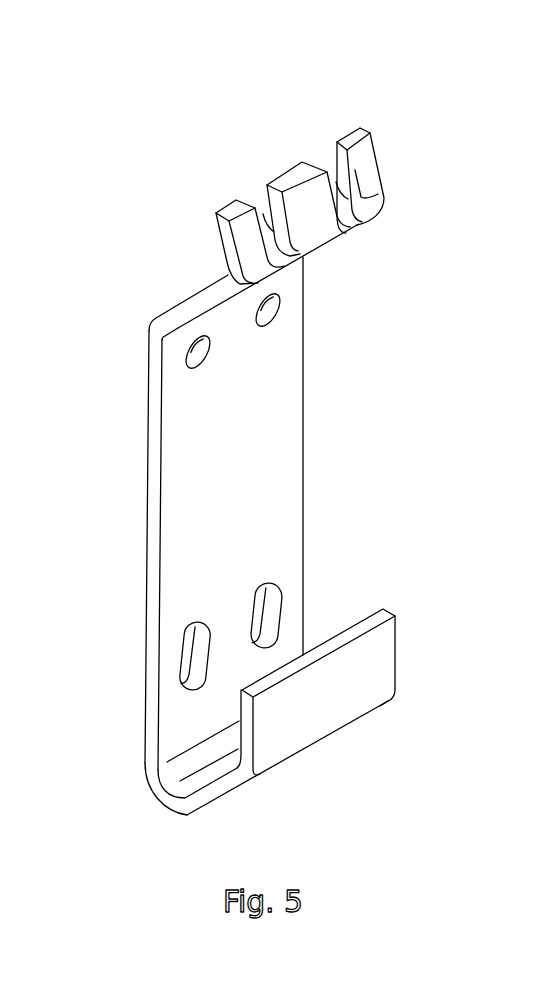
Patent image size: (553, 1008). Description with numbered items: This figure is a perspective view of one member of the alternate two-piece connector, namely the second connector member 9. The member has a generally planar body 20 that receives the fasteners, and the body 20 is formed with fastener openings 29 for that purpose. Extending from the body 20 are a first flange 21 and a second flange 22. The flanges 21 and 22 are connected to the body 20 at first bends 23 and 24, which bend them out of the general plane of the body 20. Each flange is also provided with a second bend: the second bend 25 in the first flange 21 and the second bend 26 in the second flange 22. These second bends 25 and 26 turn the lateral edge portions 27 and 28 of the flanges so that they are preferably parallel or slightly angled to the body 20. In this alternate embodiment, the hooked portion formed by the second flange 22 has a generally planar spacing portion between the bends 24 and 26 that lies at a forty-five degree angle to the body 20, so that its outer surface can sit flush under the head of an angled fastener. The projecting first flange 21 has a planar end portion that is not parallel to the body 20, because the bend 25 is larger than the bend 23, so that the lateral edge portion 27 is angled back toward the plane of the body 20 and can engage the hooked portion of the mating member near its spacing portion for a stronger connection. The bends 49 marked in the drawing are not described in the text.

The second connector member 9 is at (274, 452).
The body 20 is at (303, 522).
The first flange 21 is at (373, 150).
The second flange 22 is at (222, 800).
The first bend 23 is at (155, 318).
The first bend 24 is at (167, 808).
The second bend 25 is at (303, 281).
The second bend 26 is at (260, 781).
The lateral edge portion 27 is at (298, 176).
The lateral edge portion 28 is at (383, 613).
The fastener openings 29 is at (279, 304).
The bend 49 is at (264, 215).